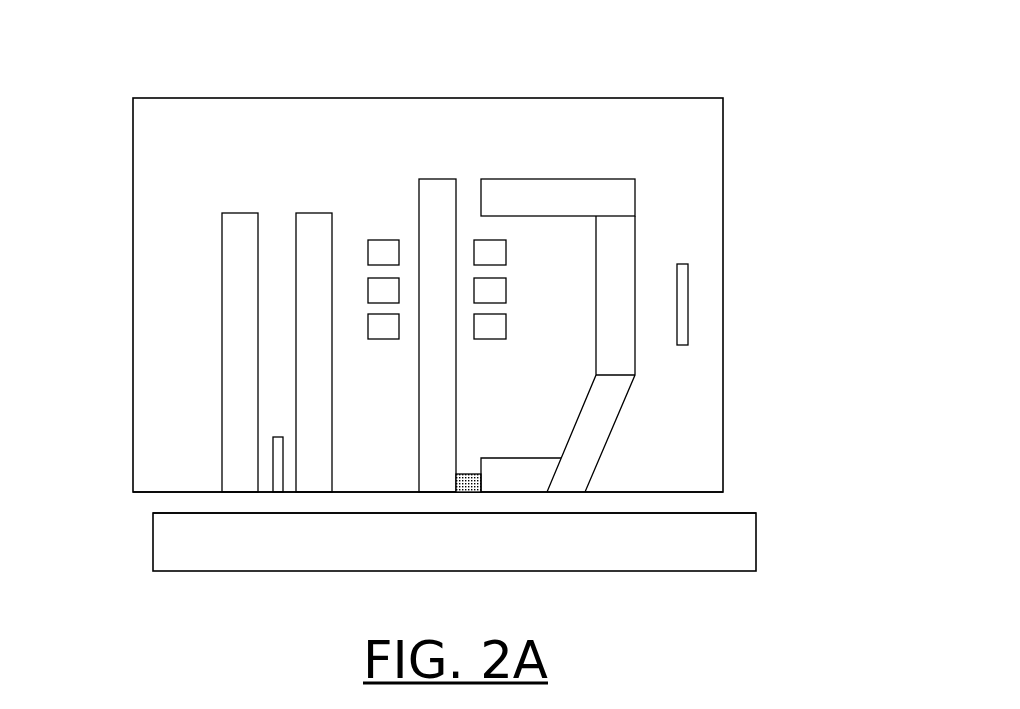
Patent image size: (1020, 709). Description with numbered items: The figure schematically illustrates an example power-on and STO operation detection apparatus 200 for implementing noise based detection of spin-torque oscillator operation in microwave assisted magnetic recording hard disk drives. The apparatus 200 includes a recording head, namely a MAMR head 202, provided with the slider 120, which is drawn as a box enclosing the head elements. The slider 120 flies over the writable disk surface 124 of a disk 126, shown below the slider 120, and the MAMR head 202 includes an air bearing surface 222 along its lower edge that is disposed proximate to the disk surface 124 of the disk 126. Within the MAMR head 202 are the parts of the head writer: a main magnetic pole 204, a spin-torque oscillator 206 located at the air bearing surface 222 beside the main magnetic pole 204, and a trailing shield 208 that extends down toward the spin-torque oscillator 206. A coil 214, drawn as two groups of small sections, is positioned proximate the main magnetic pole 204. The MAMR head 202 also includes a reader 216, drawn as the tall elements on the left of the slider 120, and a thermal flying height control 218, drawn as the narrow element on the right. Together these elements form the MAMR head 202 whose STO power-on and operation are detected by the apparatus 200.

The power-on and STO operation detection apparatus 200 is at (445, 52).
The slider 120 is at (707, 125).
The disk 126 is at (738, 546).
The disk surface 124 is at (187, 511).
The air bearing surface 222 is at (713, 494).
The MAMR head 202 is at (230, 155).
The reader 216 is at (276, 196).
The coil 214 is at (375, 214).
The main magnetic pole 204 is at (437, 335).
The spin-torque oscillator 206 is at (483, 450).
The trailing shield 208 is at (518, 477).
The thermal flying height control 218 is at (683, 264).